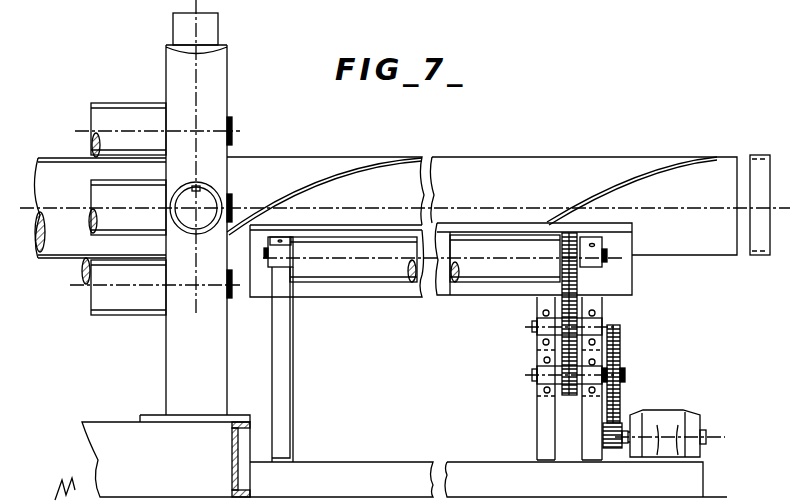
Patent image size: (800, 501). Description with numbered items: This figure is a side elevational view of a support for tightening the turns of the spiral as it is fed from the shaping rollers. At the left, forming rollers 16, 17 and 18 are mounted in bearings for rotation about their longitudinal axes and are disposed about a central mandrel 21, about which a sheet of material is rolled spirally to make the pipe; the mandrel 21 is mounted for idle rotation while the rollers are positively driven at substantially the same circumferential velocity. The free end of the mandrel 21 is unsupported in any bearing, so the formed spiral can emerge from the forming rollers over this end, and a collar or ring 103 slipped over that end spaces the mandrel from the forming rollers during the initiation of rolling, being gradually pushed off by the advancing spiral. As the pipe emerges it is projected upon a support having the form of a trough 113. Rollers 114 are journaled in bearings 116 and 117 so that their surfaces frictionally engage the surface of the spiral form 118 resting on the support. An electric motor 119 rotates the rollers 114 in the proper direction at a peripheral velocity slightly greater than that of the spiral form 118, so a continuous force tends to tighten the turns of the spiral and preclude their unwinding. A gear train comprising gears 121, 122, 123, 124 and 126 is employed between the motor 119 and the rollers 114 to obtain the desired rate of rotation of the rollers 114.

The forming roller 16 is at (97, 127).
The forming roller 17 is at (93, 182).
The forming roller 18 is at (85, 274).
The central mandrel 21 is at (50, 250).
The collar or ring 103 is at (757, 157).
The trough 113 is at (390, 290).
The roller 114 is at (337, 287).
The bearing 116 is at (290, 256).
The bearing 117 is at (600, 248).
The spiral form 118 is at (497, 160).
The electric motor 119 is at (676, 420).
The gear 121 is at (620, 428).
The gear 122 is at (621, 353).
The gear 123 is at (560, 385).
The gear 124 is at (568, 318).
The gear 126 is at (560, 250).